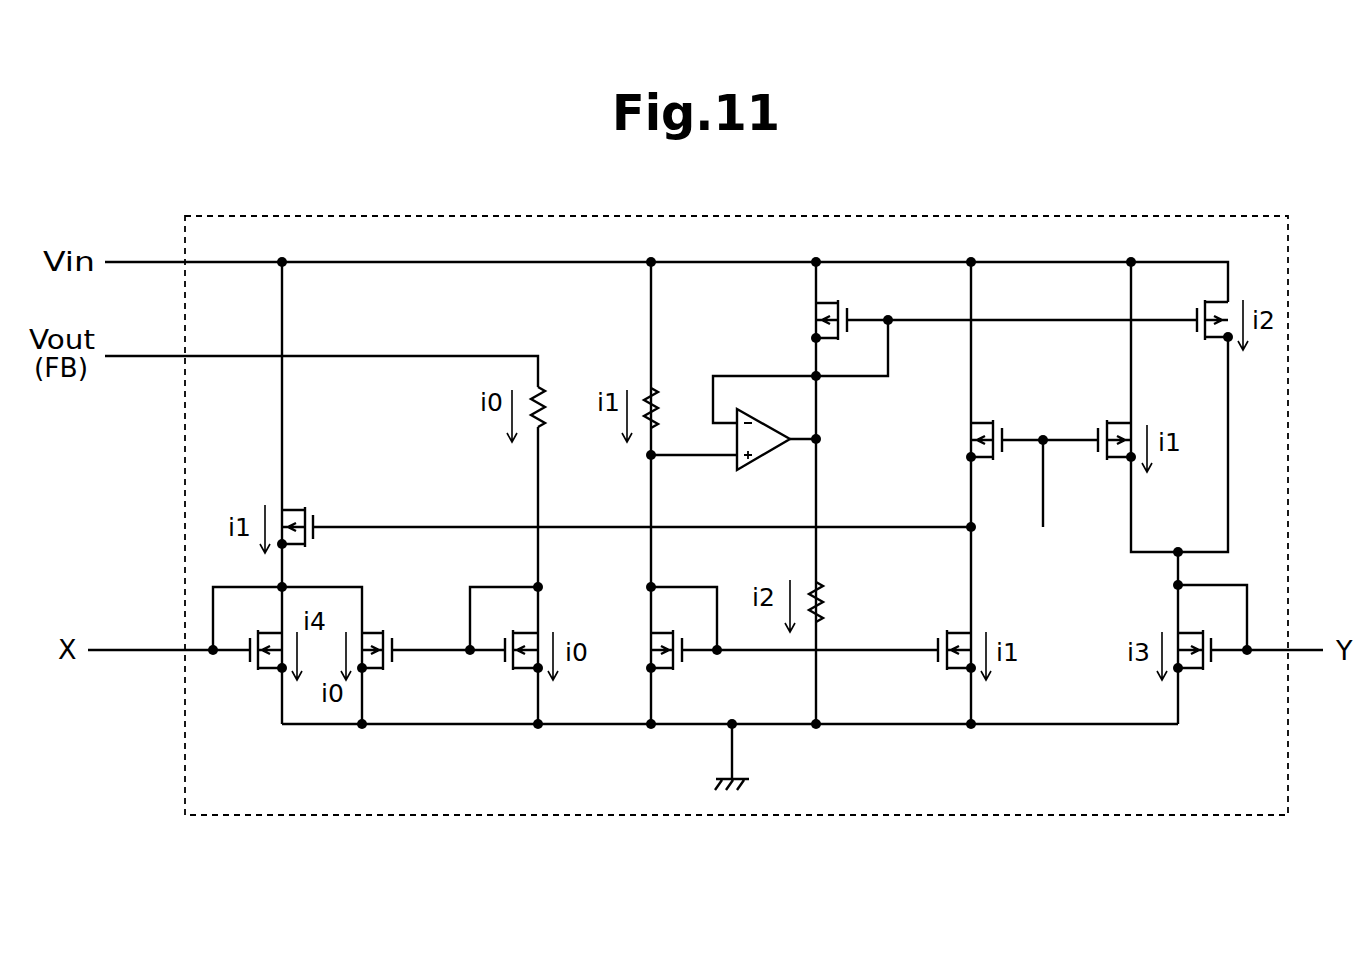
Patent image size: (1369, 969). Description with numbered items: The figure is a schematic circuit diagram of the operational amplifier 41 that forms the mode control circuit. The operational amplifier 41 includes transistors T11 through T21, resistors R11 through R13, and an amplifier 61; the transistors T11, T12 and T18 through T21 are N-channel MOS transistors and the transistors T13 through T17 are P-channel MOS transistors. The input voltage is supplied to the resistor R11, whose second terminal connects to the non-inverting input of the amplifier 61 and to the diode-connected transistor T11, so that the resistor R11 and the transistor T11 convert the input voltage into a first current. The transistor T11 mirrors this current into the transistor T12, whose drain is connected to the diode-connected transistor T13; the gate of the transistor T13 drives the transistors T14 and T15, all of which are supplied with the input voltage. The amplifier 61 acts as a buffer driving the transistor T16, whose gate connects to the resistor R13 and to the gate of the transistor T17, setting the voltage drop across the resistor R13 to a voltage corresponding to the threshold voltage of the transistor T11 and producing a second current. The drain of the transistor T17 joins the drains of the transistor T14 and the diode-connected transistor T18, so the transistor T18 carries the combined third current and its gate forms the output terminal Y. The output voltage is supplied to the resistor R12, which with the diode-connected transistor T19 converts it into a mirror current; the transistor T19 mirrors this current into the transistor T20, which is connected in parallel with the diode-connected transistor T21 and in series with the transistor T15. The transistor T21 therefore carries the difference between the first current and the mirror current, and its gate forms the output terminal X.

The operational amplifier 41 is at (1229, 215).
The amplifier 61 is at (763, 419).
The resistor R11 is at (680, 382).
The resistor R12 is at (540, 398).
The resistor R13 is at (845, 572).
The transistor T11 is at (698, 657).
The transistor T12 is at (928, 658).
The transistor T13 is at (1003, 431).
The transistor T14 is at (1100, 453).
The transistor T15 is at (317, 522).
The transistor T16 is at (846, 311).
The transistor T17 is at (1196, 305).
The transistor T18 is at (1211, 664).
The transistor T19 is at (500, 662).
The transistor T20 is at (411, 662).
The transistor T21 is at (248, 662).